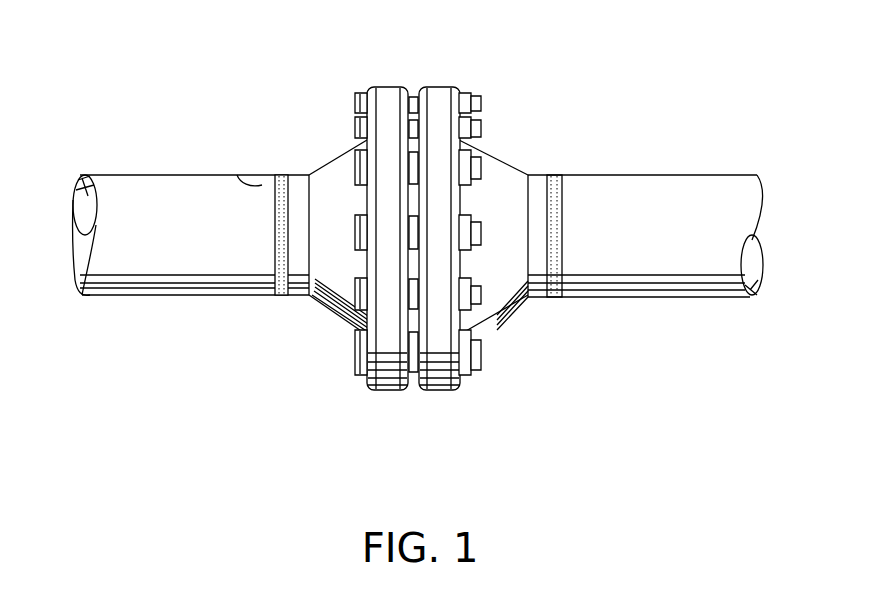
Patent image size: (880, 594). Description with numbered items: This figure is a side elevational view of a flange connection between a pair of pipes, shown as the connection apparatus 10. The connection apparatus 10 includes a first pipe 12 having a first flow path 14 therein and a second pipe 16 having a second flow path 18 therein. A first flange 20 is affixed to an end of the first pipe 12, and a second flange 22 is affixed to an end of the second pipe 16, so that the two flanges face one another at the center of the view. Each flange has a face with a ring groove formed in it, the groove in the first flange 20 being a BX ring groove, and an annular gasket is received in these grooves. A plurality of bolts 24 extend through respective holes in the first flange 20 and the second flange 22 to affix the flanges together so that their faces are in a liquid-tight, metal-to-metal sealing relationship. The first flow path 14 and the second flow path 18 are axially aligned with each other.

The connection apparatus 10 is at (549, 96).
The first pipe 12 is at (152, 180).
The first flow path 14 is at (72, 219).
The second pipe 16 is at (627, 180).
The second flow path 18 is at (752, 260).
The first flange 20 is at (385, 86).
The second flange 22 is at (445, 86).
The bolts 24 is at (355, 125).